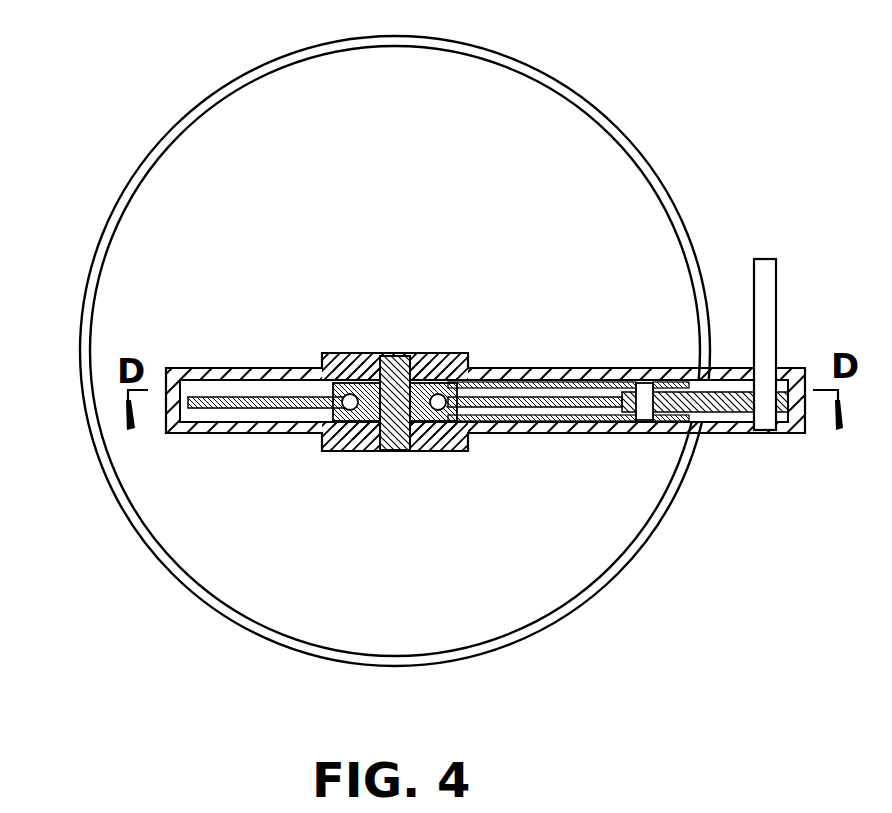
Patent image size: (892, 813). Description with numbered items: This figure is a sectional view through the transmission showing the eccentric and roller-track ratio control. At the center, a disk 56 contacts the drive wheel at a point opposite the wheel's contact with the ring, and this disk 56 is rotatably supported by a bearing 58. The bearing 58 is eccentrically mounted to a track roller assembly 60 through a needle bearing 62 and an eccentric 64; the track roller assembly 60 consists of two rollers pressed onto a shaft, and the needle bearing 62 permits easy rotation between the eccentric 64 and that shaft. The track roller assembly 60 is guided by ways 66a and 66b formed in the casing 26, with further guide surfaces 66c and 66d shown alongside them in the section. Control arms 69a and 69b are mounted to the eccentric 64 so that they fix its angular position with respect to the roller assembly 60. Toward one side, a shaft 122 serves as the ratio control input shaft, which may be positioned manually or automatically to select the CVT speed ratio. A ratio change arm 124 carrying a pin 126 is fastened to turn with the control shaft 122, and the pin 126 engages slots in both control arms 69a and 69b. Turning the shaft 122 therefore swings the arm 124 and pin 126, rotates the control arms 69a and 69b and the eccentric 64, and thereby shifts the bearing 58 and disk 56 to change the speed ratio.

The casing 26 is at (187, 479).
The disk 56 is at (604, 479).
The bearing 58 is at (411, 331).
The track roller assembly 60 is at (472, 236).
The needle bearing 62 is at (341, 526).
The eccentric 64 is at (320, 532).
The way 66a is at (245, 533).
The way 66b is at (199, 248).
The hub wall segment 66c is at (527, 221).
The hub wall segment 66d is at (523, 545).
The control arm 69a is at (584, 239).
The control arm 69b is at (597, 519).
The ratio control input shaft 122 is at (809, 326).
The ratio change arm 124 is at (719, 434).
The pin 126 is at (709, 449).